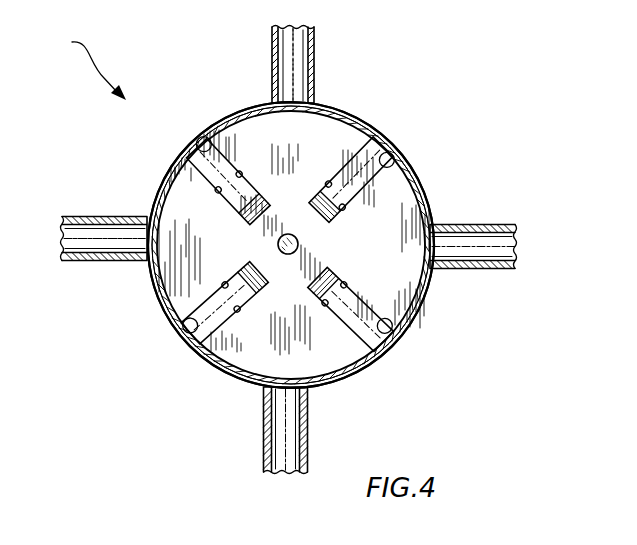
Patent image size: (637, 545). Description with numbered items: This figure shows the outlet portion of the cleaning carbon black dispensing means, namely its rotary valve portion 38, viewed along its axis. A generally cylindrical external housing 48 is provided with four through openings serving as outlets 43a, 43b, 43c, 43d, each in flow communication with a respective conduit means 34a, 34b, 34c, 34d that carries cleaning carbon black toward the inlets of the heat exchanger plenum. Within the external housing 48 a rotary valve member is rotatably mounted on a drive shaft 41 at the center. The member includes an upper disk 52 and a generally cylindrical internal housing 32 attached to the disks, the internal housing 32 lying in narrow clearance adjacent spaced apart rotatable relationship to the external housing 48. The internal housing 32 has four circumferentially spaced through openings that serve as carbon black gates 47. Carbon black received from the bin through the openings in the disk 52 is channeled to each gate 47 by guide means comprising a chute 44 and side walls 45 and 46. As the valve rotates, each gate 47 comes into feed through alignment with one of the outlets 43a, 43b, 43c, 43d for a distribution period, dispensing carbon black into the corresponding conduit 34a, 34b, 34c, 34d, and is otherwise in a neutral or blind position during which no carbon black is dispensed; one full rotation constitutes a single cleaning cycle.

The rotary valve portion 38 is at (85, 64).
The internal housing 32 is at (340, 109).
The external housing 48 is at (373, 122).
The upper disk 52 is at (422, 180).
The conduit means 34a is at (90, 266).
The conduit means 34b is at (263, 430).
The conduit means 34c is at (496, 222).
The conduit means 34d is at (315, 38).
The outlet 43a is at (130, 232).
The outlet 43b is at (290, 394).
The outlet 43c is at (433, 242).
The outlet 43d is at (298, 98).
The drive shaft 41 is at (289, 234).
The chute 44 is at (228, 177).
The side wall 45 is at (240, 173).
The side wall 46 is at (221, 190).
The gate 47 is at (197, 137).